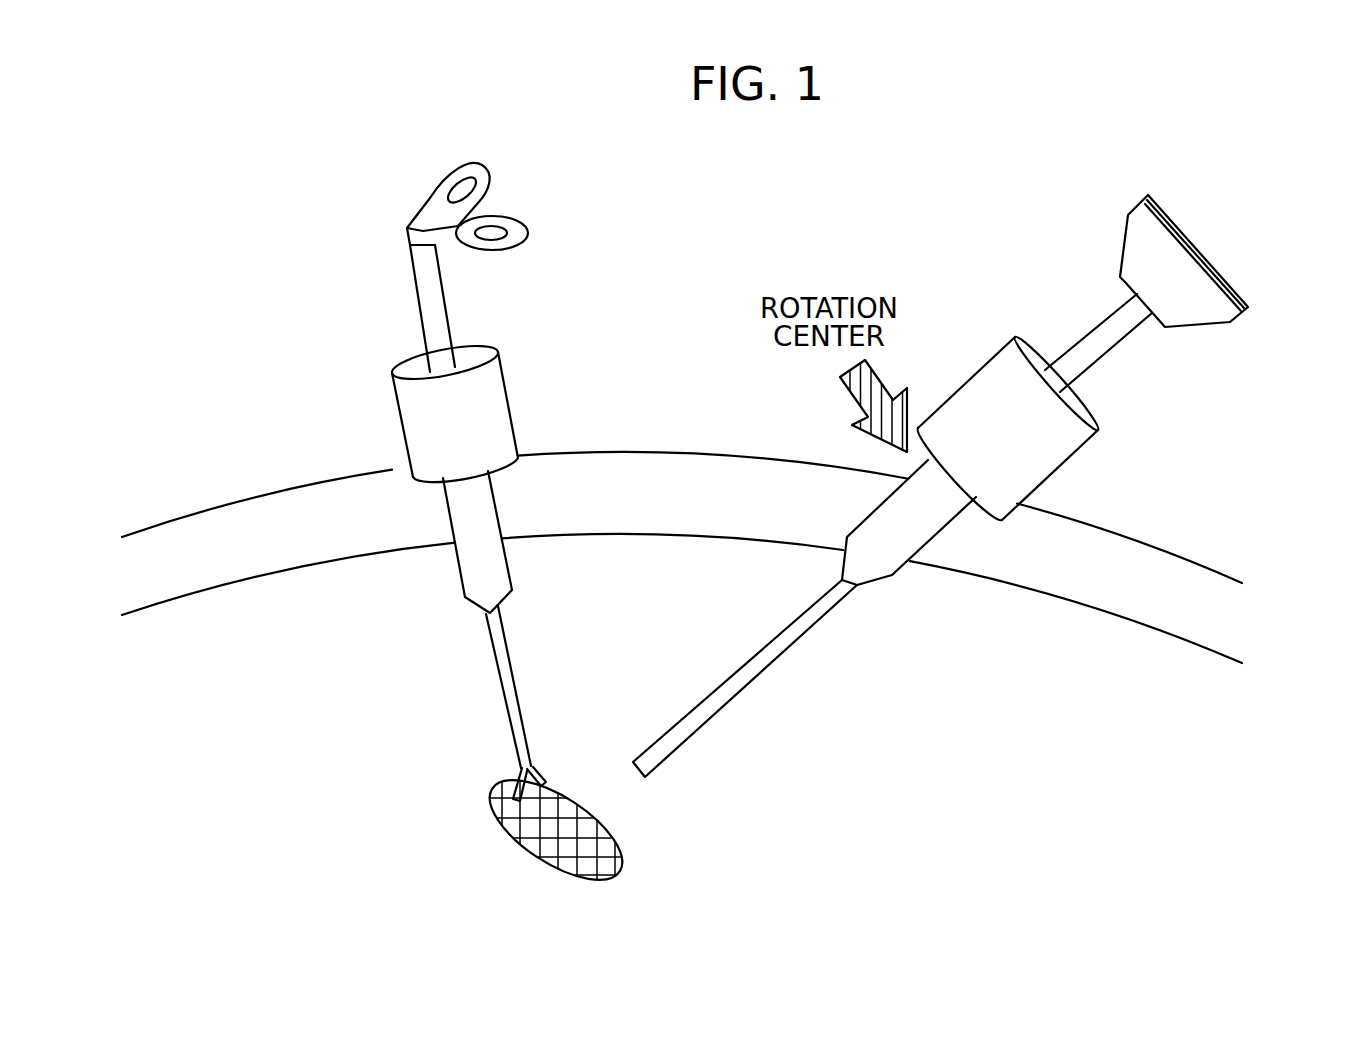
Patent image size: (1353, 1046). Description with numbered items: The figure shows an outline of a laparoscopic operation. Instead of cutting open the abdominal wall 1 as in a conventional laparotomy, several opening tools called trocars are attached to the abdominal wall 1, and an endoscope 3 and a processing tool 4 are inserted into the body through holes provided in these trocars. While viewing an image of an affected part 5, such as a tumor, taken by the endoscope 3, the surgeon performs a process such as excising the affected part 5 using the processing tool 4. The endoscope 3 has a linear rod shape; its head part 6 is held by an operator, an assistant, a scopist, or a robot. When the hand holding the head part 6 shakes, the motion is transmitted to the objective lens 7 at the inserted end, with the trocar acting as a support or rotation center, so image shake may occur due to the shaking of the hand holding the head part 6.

The abdominal wall 1 is at (228, 508).
The endoscope 3 is at (1118, 343).
The processing tool 4 is at (445, 307).
The affected part 5 is at (620, 877).
The head part 6 is at (1248, 308).
The objective lens 7 is at (648, 778).